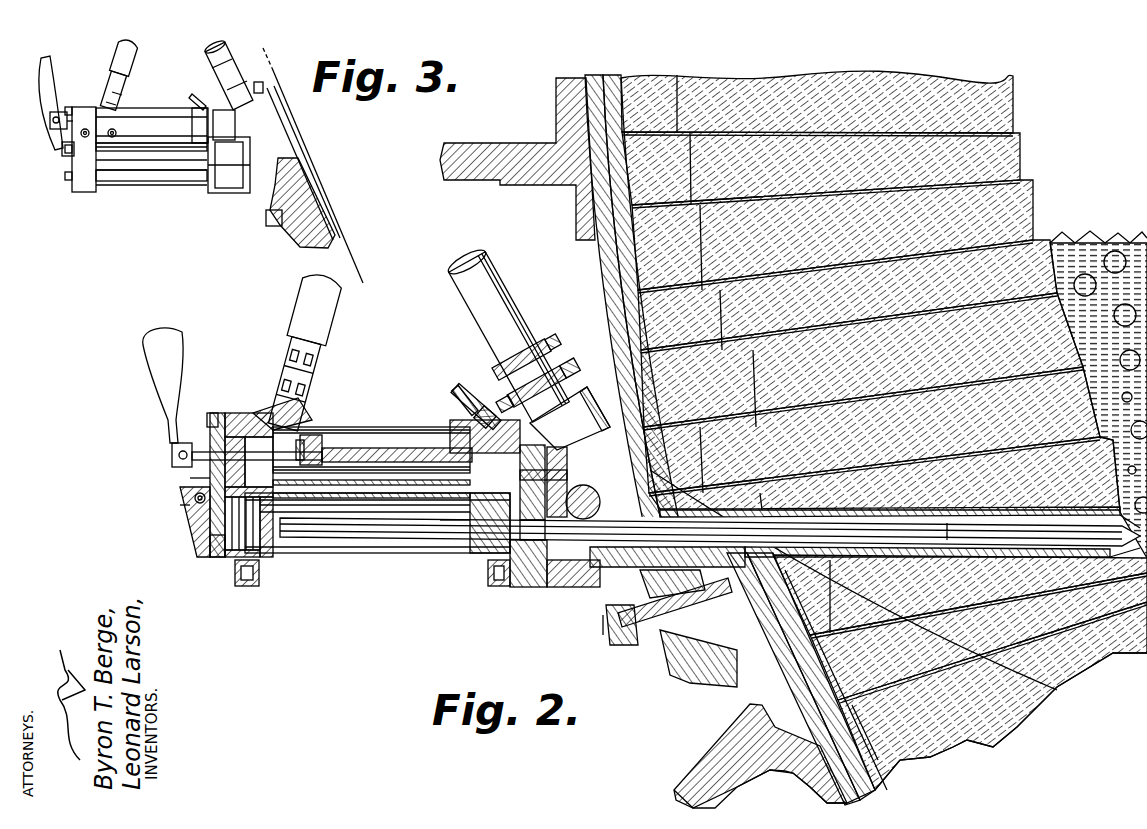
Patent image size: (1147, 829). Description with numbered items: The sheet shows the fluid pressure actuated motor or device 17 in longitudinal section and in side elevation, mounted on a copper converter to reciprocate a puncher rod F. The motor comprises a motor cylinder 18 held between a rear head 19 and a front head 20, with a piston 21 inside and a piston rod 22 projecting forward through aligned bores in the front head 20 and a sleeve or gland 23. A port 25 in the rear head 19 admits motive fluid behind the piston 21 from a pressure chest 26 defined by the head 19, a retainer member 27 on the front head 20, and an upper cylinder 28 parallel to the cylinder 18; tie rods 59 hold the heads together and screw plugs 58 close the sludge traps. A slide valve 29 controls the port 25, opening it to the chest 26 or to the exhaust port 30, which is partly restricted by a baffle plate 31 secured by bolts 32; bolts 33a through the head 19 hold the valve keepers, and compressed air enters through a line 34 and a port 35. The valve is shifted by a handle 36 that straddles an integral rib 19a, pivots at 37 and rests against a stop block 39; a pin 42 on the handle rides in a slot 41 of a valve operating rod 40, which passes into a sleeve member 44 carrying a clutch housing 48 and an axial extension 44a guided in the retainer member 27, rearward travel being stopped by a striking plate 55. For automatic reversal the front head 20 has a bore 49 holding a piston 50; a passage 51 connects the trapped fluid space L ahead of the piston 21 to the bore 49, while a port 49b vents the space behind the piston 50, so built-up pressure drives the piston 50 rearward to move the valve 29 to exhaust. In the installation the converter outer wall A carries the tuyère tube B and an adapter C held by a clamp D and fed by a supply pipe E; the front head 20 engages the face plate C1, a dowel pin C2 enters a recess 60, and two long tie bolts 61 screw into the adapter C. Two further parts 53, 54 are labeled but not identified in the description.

In FIG. 3, the fluid pressure actuated motor 17 is at (178, 186).
In FIG. 2, the fluid pressure actuated motor 17 is at (370, 562).
In FIG. 3, the motor cylinder 18 is at (150, 181).
In FIG. 2, the motor cylinder 18 is at (395, 553).
In FIG. 3, the rear head 19 is at (85, 192).
In FIG. 2, the rear head 19 is at (245, 580).
In FIG. 2, the integral rib 19a is at (190, 535).
In FIG. 3, the front head 20 is at (225, 193).
In FIG. 2, the front head 20 is at (515, 588).
In FIG. 2, the piston 21 is at (262, 556).
In FIG. 2, the piston rod 22 is at (330, 540).
In FIG. 2, the sleeve or gland 23 is at (600, 568).
In FIG. 2, the port 25 is at (210, 550).
In FIG. 2, the pressure chest 26 is at (383, 477).
In FIG. 2, the retainer member 27 is at (420, 430).
In FIG. 3, the upper cylinder 28 is at (135, 108).
In FIG. 2, the upper cylinder 28 is at (385, 427).
In FIG. 2, the slide valve 29 is at (200, 480).
In FIG. 2, the exhaust port 30 is at (306, 514).
In FIG. 3, the baffle plate 31 is at (130, 151).
In FIG. 3, the bolts 32 is at (108, 151).
In FIG. 3, the bolts 33a is at (112, 128).
In FIG. 3, the line 34 is at (118, 50).
In FIG. 2, the line 34 is at (320, 306).
In FIG. 2, the port 35 is at (248, 412).
In FIG. 3, the handle 36 is at (48, 62).
In FIG. 2, the handle 36 is at (175, 345).
In FIG. 3, the pivot 37 is at (66, 152).
In FIG. 2, the pivot 37 is at (195, 498).
In FIG. 2, the stop block 39 is at (185, 506).
In FIG. 2, the valve operating rod 40 is at (210, 440).
In FIG. 2, the slot 41 is at (178, 452).
In FIG. 2, the pin 42 is at (172, 460).
In FIG. 2, the sleeve member 44 is at (330, 448).
In FIG. 2, the axial extension 44a is at (398, 448).
In FIG. 2, the housing 48 is at (312, 435).
In FIG. 2, the bore 49 is at (545, 456).
In FIG. 2, the vent port 49b is at (460, 522).
In FIG. 2, the piston 50 is at (538, 437).
In FIG. 2, the passage 51 is at (470, 484).
In FIG. 2, the pipe fitting 53 is at (480, 404).
In FIG. 3, the pipe connection 54 is at (193, 95).
In FIG. 2, the pipe connection 54 is at (455, 384).
In FIG. 2, the striking plate 55 is at (215, 413).
In FIG. 2, the screw plugs 58 is at (238, 582).
In FIG. 3, the tie rods 59 is at (160, 108).
In FIG. 2, the tie rods 59 is at (360, 427).
In FIG. 2, the recess 60 is at (567, 466).
In FIG. 3, the tie bolts 61 is at (192, 175).
In FIG. 3, the converter outer wall A is at (270, 72).
In FIG. 2, the converter outer wall A is at (585, 250).
In FIG. 2, the tuyère tube B is at (1040, 700).
In FIG. 3, the adapter C is at (285, 140).
In FIG. 2, the adapter C is at (575, 590).
In FIG. 2, the face plate C1 is at (527, 590).
In FIG. 2, the dowel pin C2 is at (567, 478).
In FIG. 3, the clamp D is at (298, 238).
In FIG. 2, the clamp D is at (665, 665).
In FIG. 3, the supply pipe E is at (232, 55).
In FIG. 2, the supply pipe E is at (522, 312).
In FIG. 2, the puncher rod F is at (770, 545).
In FIG. 2, the space L is at (460, 540).